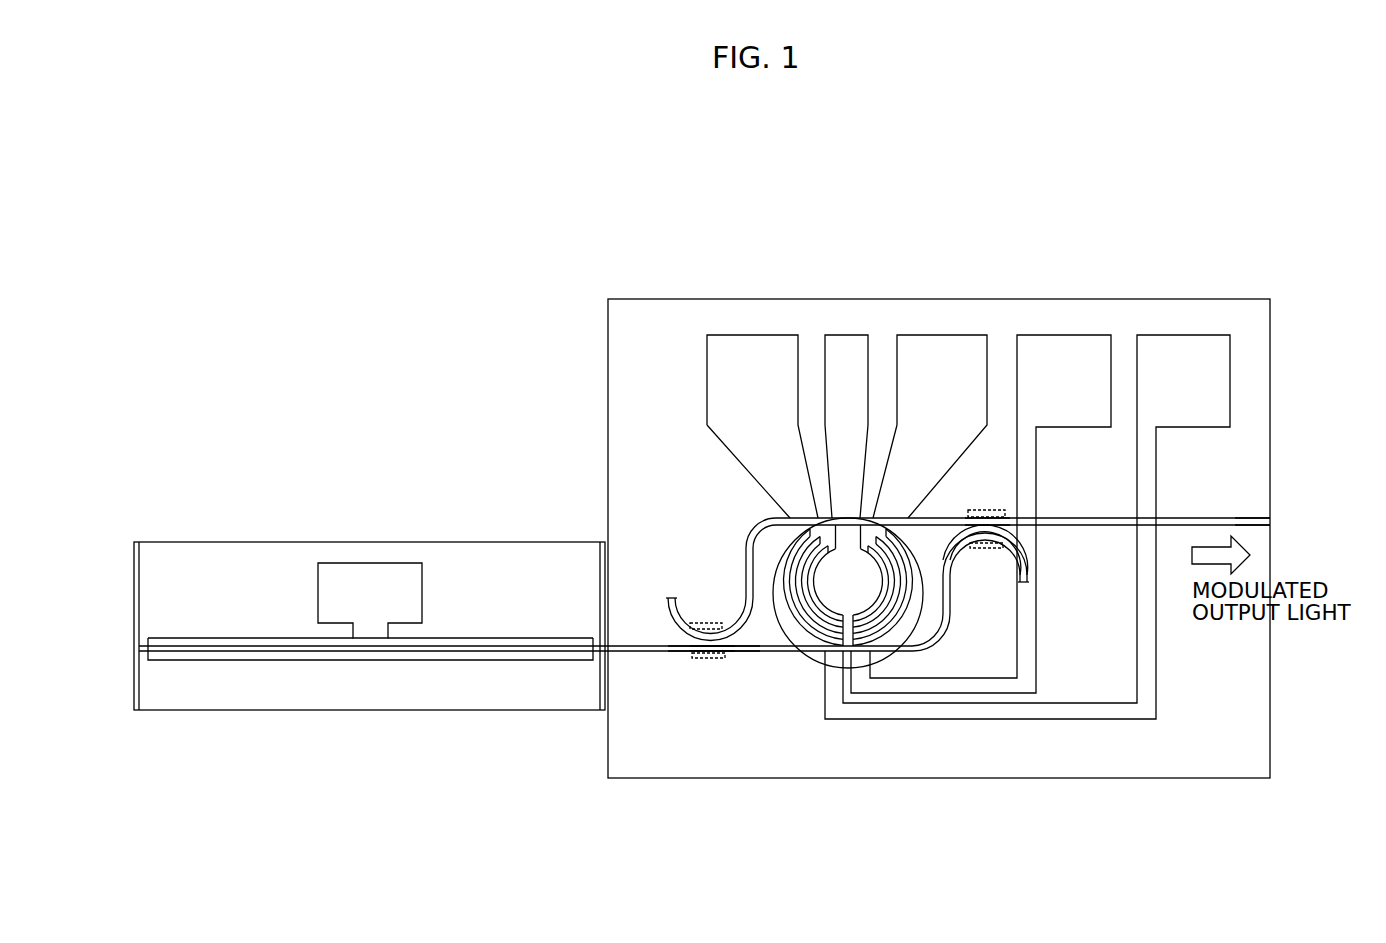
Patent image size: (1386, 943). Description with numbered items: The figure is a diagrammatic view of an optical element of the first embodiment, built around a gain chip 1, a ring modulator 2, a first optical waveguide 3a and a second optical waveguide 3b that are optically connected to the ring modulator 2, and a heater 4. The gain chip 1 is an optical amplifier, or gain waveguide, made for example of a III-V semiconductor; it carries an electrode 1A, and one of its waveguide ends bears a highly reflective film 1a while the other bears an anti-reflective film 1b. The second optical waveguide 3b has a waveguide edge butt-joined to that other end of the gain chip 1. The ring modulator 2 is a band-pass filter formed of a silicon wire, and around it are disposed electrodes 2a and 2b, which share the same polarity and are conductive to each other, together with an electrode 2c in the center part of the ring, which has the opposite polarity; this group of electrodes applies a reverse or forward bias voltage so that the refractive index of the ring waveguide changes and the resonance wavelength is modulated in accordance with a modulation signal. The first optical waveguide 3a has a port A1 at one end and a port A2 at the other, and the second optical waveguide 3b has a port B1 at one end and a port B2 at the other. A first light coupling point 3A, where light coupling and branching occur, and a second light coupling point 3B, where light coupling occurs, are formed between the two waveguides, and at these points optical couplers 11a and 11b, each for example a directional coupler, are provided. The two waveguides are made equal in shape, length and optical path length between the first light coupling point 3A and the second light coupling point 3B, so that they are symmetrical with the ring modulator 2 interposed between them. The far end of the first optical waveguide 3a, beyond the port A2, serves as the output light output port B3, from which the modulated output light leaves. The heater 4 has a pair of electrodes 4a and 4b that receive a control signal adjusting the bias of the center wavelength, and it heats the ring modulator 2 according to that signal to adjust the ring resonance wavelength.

The gain chip 1 is at (303, 542).
The highly reflective (HR) film 1a is at (136, 558).
The anti-reflective (AR) film 1b is at (608, 556).
The electrode 1A is at (388, 575).
The ring modulator 2 is at (927, 615).
The electrode 2a is at (757, 335).
The electrode 2b is at (938, 335).
The electrode 2c is at (848, 335).
The first optical waveguide 3a is at (782, 518).
The second optical waveguide 3b is at (913, 651).
The first light coupling point 3A is at (708, 654).
The second light coupling point 3B is at (988, 549).
The heater 4 is at (789, 566).
The electrode 4a is at (1072, 427).
The electrode 4b is at (1189, 427).
The optical coupler 11a is at (700, 656).
The optical coupler 11b is at (990, 510).
The port A1 is at (735, 620).
The port A2 is at (907, 520).
The port B1 is at (733, 658).
The port B2 is at (972, 552).
The output light output port B3 is at (1257, 517).